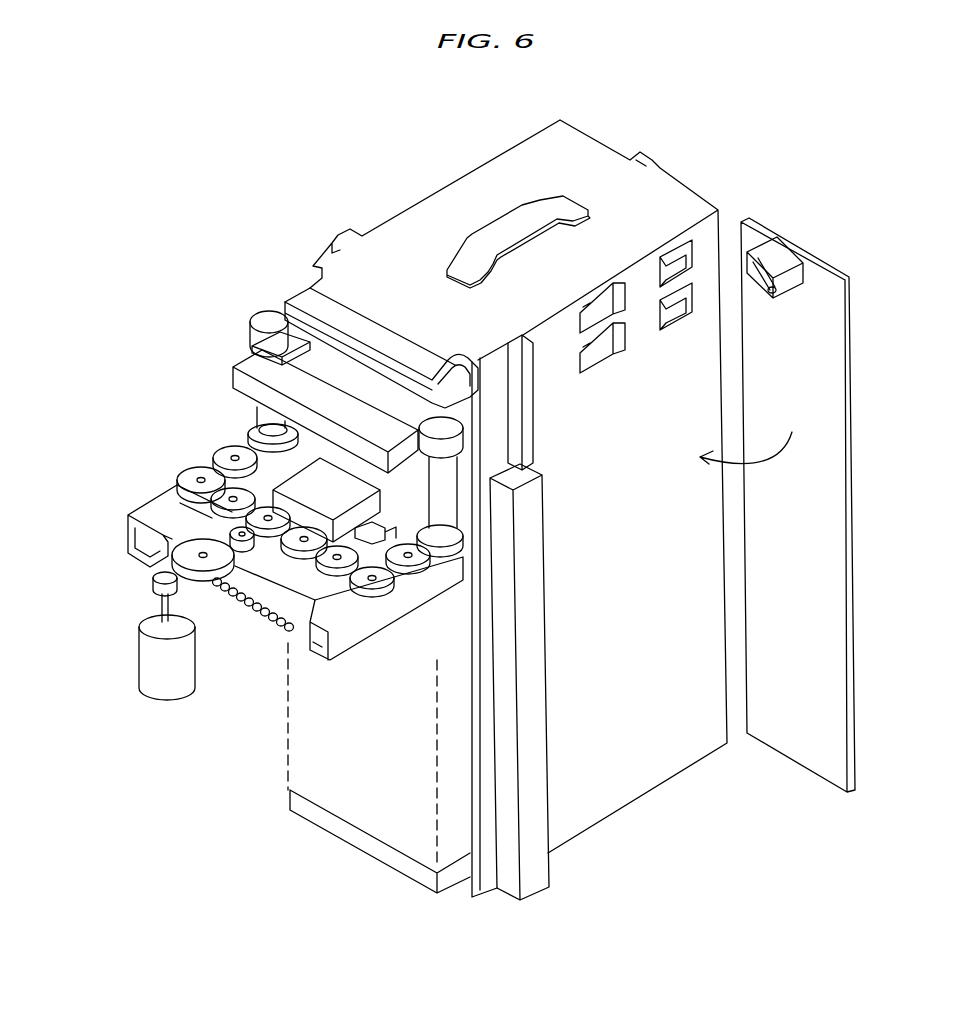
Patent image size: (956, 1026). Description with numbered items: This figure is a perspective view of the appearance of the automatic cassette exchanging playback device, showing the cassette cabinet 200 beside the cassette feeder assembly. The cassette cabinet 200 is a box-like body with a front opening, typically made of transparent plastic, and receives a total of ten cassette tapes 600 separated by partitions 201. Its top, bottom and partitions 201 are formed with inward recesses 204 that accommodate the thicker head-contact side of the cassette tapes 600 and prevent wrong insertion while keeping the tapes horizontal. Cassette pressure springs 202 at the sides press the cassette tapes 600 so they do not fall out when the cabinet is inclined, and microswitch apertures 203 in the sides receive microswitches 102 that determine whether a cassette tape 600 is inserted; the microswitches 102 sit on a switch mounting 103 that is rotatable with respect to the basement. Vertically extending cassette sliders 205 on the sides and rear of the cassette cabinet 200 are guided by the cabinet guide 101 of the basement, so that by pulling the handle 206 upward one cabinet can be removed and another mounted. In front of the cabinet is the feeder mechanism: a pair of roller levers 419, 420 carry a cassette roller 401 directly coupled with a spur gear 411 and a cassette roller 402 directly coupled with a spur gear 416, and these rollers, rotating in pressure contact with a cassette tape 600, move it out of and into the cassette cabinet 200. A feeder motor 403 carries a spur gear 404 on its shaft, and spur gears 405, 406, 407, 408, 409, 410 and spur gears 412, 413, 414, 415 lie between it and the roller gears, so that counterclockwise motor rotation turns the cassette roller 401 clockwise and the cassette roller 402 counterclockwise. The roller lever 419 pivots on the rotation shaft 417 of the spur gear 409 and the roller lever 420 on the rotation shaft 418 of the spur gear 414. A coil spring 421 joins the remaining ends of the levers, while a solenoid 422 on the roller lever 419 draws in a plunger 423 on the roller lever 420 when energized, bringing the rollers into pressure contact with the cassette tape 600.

The cabinet guide 101 is at (545, 887).
The microswitches 102 is at (766, 250).
The switch mounting 103 is at (803, 262).
The cassette cabinet 200 is at (423, 190).
The partitions 201 is at (362, 378).
The cassette pressure springs 202 is at (598, 305).
The microswitch apertures 203 is at (673, 257).
The inward recesses 204 is at (283, 328).
The cassette sliders 205 is at (655, 162).
The handle 206 is at (538, 200).
The cassette roller 401 is at (253, 326).
The cassette roller 402 is at (458, 446).
The feeder motor 403 is at (143, 678).
The spur gear 404 is at (158, 582).
The spur gear 405 is at (202, 588).
The spur gear 406 is at (243, 548).
The spur gear 407 is at (272, 522).
The spur gear 408 is at (210, 507).
The spur gear 409 is at (193, 472).
The spur gear 410 is at (240, 456).
The spur gear 411 is at (258, 432).
The spur gear 412 is at (307, 543).
The spur gear 413 is at (347, 578).
The spur gear 414 is at (385, 592).
The spur gear 415 is at (420, 572).
The spur gear 416 is at (453, 547).
The rotation shaft 417 is at (199, 478).
The rotation shaft 418 is at (373, 584).
The roller lever 419 is at (128, 534).
The roller lever 420 is at (338, 650).
The coil spring 421 is at (268, 613).
The solenoid 422 is at (360, 495).
The plunger 423 is at (372, 532).
The cassette tapes 600 is at (293, 297).